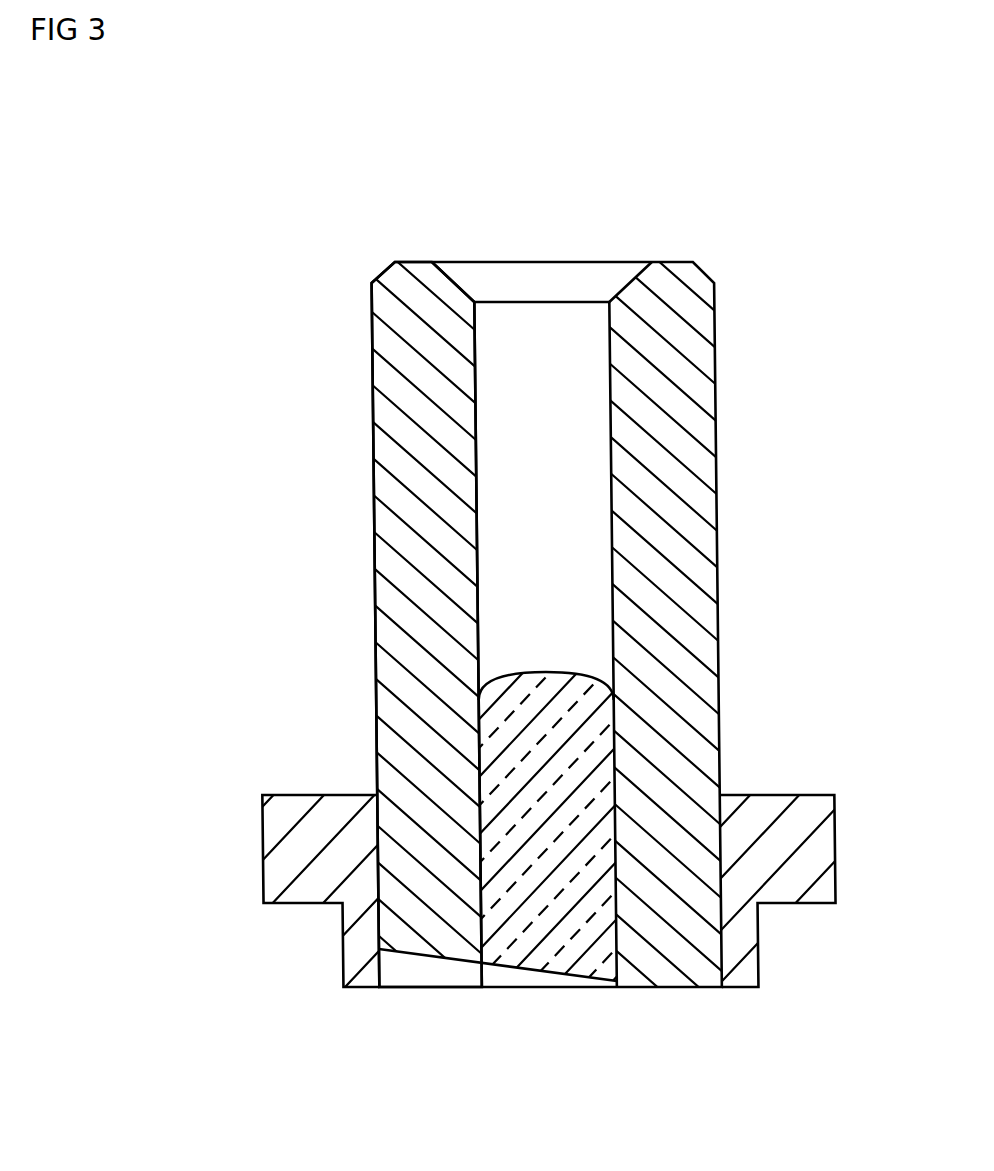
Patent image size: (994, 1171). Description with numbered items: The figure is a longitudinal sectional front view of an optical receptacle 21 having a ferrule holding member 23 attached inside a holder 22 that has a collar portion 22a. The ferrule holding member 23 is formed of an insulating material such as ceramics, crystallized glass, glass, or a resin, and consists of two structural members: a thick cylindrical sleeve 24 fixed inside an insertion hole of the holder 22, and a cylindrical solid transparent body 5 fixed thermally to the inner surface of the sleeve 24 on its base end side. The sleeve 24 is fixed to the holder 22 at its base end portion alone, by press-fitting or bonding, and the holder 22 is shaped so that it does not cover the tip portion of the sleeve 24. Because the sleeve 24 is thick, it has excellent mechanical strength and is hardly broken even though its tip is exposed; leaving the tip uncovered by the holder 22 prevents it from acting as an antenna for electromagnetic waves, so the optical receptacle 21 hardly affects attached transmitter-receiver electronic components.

The optical receptacle 21 is at (758, 247).
The holder 22 is at (818, 846).
The collar portion 22a is at (292, 846).
The ferrule holding member 23 is at (372, 437).
The sleeve 24 is at (425, 592).
The cylindrical solid transparent body 5 is at (511, 762).